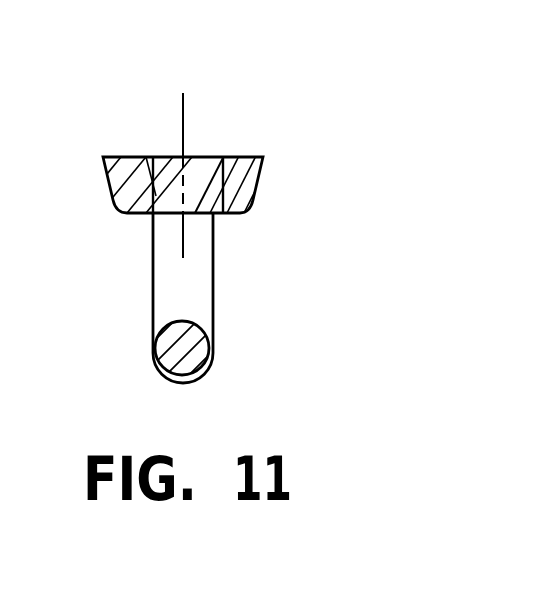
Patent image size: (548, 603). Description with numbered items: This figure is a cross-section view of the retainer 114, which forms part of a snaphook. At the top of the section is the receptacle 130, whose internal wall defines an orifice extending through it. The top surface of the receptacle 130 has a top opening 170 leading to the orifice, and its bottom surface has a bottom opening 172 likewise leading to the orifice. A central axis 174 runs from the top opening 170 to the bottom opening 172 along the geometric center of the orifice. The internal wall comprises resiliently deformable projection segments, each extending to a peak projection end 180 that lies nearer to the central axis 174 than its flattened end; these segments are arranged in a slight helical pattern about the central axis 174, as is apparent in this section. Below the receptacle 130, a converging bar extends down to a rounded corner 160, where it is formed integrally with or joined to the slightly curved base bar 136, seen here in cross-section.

The retainer 114 is at (306, 104).
The receptacle 130 is at (252, 209).
The base bar 136 is at (157, 350).
The rounded corner 160 is at (213, 297).
The top opening 170 is at (153, 157).
The bottom opening 172 is at (207, 214).
The central axis 174 is at (185, 110).
The peak projection end 180 is at (228, 118).